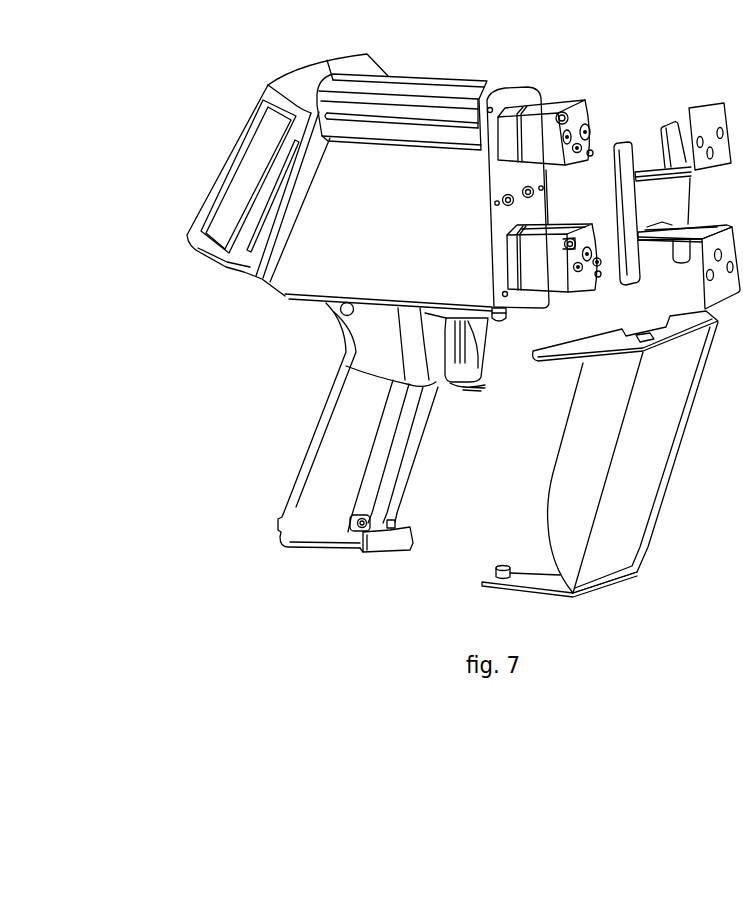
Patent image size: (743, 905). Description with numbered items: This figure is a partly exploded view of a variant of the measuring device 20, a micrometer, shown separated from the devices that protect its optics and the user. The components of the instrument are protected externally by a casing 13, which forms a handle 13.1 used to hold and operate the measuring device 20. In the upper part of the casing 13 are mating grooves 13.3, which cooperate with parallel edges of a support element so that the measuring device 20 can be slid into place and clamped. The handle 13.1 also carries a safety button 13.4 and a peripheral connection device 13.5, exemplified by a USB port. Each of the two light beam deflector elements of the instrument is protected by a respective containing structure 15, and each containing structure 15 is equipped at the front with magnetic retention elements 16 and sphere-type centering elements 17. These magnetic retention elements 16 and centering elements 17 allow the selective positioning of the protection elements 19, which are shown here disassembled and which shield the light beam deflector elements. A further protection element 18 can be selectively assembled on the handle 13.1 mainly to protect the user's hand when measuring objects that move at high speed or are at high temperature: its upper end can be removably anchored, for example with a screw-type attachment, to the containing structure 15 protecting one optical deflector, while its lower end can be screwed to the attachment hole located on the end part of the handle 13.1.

The measuring device 20 is at (228, 93).
The casing 13 is at (349, 66).
The handle 13.1 is at (333, 455).
The mating grooves 13.3 is at (429, 120).
The safety button 13.4 is at (502, 325).
The peripheral connection device 13.5 is at (312, 546).
The containing structure 15 is at (560, 103).
The magnetic retention elements 16 is at (570, 134).
The centering elements 17 is at (577, 152).
The protection element 18 is at (649, 461).
The protection elements 19 is at (707, 120).